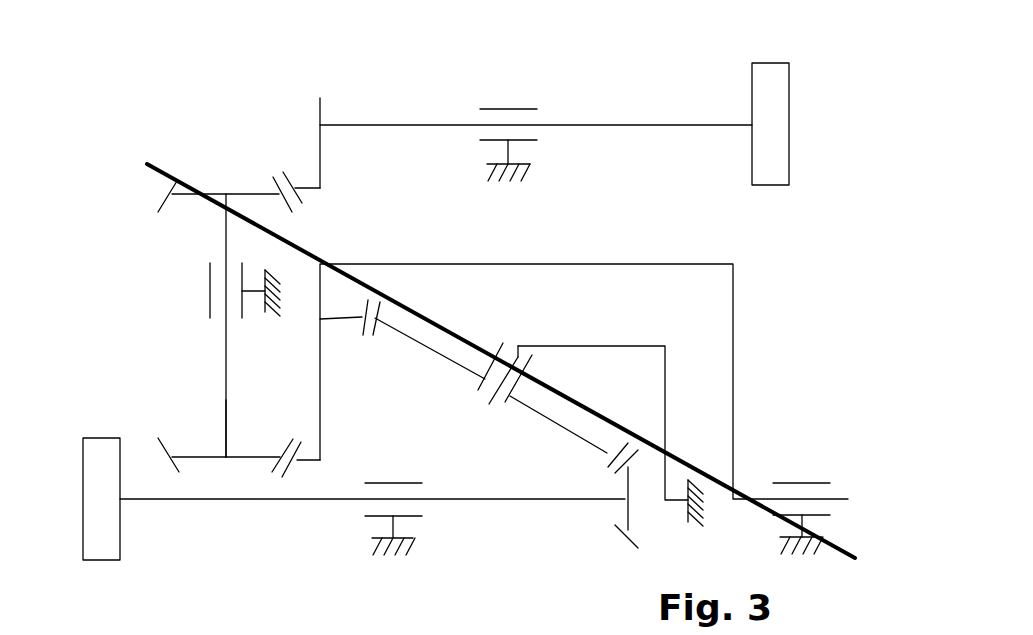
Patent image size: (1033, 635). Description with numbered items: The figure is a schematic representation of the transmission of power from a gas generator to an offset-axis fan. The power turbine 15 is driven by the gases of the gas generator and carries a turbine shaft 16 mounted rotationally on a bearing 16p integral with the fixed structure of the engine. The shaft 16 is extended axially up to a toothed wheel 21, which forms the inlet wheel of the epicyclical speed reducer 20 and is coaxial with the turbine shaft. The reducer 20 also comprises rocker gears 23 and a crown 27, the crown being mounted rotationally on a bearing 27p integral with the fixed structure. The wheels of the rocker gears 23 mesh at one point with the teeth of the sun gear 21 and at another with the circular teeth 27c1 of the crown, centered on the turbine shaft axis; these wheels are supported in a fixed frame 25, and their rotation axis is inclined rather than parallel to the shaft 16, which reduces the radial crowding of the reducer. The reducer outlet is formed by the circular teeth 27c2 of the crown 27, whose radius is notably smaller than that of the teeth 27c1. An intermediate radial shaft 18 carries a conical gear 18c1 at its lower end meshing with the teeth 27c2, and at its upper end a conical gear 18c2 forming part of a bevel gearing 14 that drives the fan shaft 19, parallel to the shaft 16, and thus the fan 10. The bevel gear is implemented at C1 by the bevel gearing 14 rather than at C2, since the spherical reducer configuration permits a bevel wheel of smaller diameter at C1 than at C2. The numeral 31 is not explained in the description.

The fan 10 is at (832, 105).
The bevel gearing 14 is at (292, 178).
The power turbine 15 is at (83, 466).
The turbine shaft 16 is at (198, 500).
The bearing 16p is at (402, 483).
The intermediate radial shaft 18 is at (223, 349).
The conical gear 18c1 is at (205, 455).
The conical gear 18c2 is at (250, 194).
The fan shaft 19 is at (388, 125).
The speed reducer 20 is at (808, 292).
The toothed wheel 21 is at (625, 508).
The rocker gears 23 is at (567, 422).
The fixed frame 25 is at (665, 362).
The crown 27 is at (733, 295).
The circular teeth 27c1 is at (363, 323).
The circular teeth 27c2 is at (290, 470).
The bearing 27p is at (812, 483).
The reference plane 31 is at (148, 625).
The bevel gear connection location C1 is at (303, 428).
The alternative bevel gear location C2 is at (358, 278).